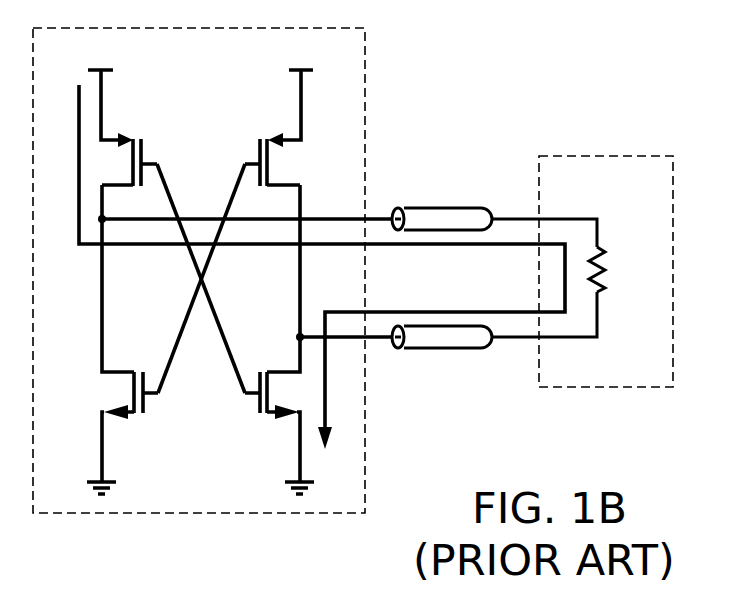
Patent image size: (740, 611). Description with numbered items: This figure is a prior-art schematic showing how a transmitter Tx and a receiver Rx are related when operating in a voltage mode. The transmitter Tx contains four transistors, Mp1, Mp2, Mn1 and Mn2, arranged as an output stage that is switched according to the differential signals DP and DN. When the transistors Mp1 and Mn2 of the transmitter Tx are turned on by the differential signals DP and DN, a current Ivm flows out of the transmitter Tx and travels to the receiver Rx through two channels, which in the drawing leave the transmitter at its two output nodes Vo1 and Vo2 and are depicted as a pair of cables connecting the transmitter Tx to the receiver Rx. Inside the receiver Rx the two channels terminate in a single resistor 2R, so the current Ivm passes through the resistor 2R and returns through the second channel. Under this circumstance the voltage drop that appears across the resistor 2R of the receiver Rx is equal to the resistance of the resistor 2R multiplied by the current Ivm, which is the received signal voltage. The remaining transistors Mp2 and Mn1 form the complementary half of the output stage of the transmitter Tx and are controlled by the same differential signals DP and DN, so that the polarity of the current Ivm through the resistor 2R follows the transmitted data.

The transmitter Tx is at (199, 270).
The receiver Rx is at (606, 271).
The transistor Mp1 is at (128, 128).
The transistor Mp2 is at (293, 128).
The transistor Mn1 is at (114, 339).
The transistor Mn2 is at (276, 339).
The differential signal DP is at (201, 288).
The differential signal DN is at (201, 288).
The output node Vo1 is at (347, 219).
The output node Vo2 is at (421, 320).
The current Ivm is at (322, 267).
The resistor 2R is at (616, 269).